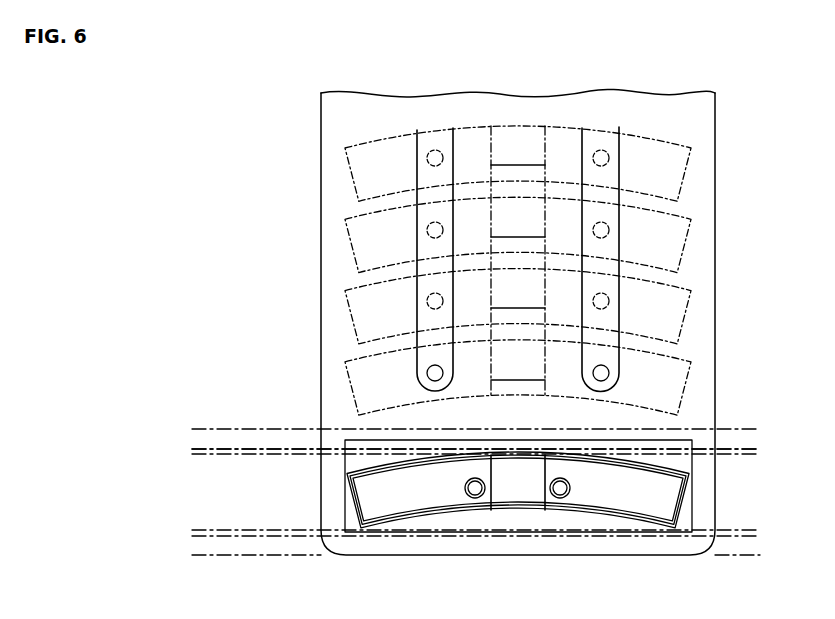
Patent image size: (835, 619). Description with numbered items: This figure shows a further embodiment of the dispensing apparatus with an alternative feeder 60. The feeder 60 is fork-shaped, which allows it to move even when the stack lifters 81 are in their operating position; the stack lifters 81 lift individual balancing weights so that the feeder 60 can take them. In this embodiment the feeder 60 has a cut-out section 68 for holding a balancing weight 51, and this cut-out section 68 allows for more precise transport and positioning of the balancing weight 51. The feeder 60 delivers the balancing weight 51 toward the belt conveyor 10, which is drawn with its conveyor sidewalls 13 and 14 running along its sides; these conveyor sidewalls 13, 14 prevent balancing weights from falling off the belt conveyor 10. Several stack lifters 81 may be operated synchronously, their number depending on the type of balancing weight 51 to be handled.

The feeder 60 is at (675, 118).
The stack lifter 81 is at (427, 373).
The conveyor sidewall 13 is at (226, 437).
The belt conveyor 10 is at (262, 475).
The conveyor sidewall 14 is at (247, 557).
The cut-out section 68 is at (676, 465).
The balancing weight 51 is at (655, 500).